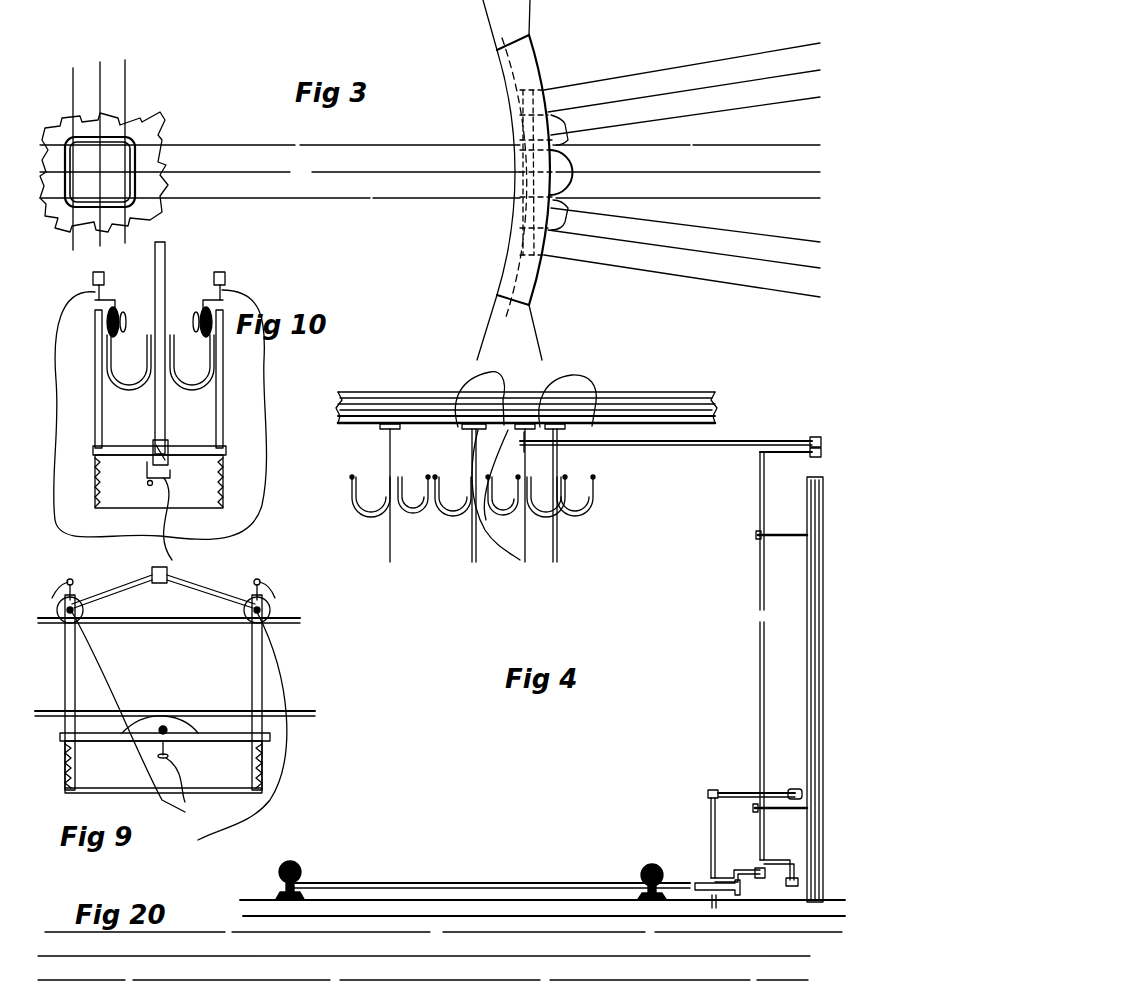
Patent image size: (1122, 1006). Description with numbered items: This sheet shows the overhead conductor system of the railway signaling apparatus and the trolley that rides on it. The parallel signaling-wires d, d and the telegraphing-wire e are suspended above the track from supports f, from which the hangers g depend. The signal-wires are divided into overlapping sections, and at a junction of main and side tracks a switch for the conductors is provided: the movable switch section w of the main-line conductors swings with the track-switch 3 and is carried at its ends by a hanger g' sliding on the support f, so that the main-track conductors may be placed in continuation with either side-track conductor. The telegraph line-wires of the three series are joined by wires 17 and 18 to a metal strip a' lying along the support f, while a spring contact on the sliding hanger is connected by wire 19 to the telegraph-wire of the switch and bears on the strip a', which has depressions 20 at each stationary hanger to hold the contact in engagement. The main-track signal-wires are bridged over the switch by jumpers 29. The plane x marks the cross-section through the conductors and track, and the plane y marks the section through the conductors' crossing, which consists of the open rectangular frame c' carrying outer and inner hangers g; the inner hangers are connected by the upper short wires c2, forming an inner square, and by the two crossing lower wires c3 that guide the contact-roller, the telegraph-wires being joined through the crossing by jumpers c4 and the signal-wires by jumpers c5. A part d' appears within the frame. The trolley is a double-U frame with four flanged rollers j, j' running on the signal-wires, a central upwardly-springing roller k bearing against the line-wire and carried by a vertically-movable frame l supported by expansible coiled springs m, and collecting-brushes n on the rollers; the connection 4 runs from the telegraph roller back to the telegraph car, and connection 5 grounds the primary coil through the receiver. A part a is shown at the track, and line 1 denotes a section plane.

In FIG. 3, the section line y is at (100, 149).
In FIG. 10, the section line y is at (159, 271).
In FIG. 3, the open rectangular frame c' is at (107, 155).
In FIG. 3, the upper short wires c2 is at (72, 158).
In FIG. 3, the lower crossing wires c3 is at (102, 184).
In FIG. 3, the telegraph bridges or jumpers c4 is at (133, 143).
In FIG. 3, the signal-wire jumpers c5 is at (113, 171).
In FIG. 3, the conduit section d' is at (100, 172).
In FIG. 3, the signaling-wires d is at (430, 170).
In FIG. 10, the signaling-wires d is at (160, 362).
In FIG. 9, the signaling-wires d is at (181, 620).
In FIG. 4, the signaling-wires d is at (556, 473).
In FIG. 20, the signaling-wires d is at (440, 966).
In FIG. 3, the telegraphing-wire e is at (440, 168).
In FIG. 10, the telegraphing-wire e is at (164, 446).
In FIG. 9, the telegraphing-wire e is at (182, 714).
In FIG. 4, the telegraphing-wire e is at (472, 562).
In FIG. 20, the telegraphing-wire e is at (365, 957).
In FIG. 3, the support f is at (540, 280).
In FIG. 4, the support f is at (718, 400).
In FIG. 3, the section line x is at (505, 184).
In FIG. 3, the sliding hanger g' is at (523, 172).
In FIG. 3, the bridges or jumpers 29 is at (518, 160).
In FIG. 4, the bridges or jumpers 29 is at (490, 382).
In FIG. 3, the switch section w is at (533, 172).
In FIG. 4, the switch section w is at (477, 576).
In FIG. 3, the connecting wire 17 is at (570, 125).
In FIG. 10, the hanger g is at (173, 348).
In FIG. 4, the hanger g is at (462, 481).
In FIG. 10, the vertically-movable frame l is at (226, 462).
In FIG. 9, the vertically-movable frame l is at (212, 742).
In FIG. 10, the expansible coiled springs m is at (92, 482).
In FIG. 9, the expansible coiled springs m is at (265, 762).
In FIG. 10, the collecting-brush n is at (170, 484).
In FIG. 10, the flanged rollers j is at (159, 320).
In FIG. 9, the roller j' is at (176, 595).
In FIG. 10, the upwardly-springing roller k is at (170, 462).
In FIG. 9, the upwardly-springing roller k is at (168, 722).
In FIG. 10, the connection 4 is at (160, 425).
In FIG. 9, the connection 4 is at (179, 726).
In FIG. 4, the depressions 20 is at (477, 417).
In FIG. 4, the connection 5 is at (528, 436).
In FIG. 4, the wire 19 is at (500, 528).
In FIG. 4, the connecting wire 18 is at (478, 546).
In FIG. 4, the metal strip a' is at (670, 438).
In FIG. 4, the section line 1 is at (759, 680).
In FIG. 4, the track-switch 3 is at (542, 888).
In FIG. 4, the knob a is at (471, 878).